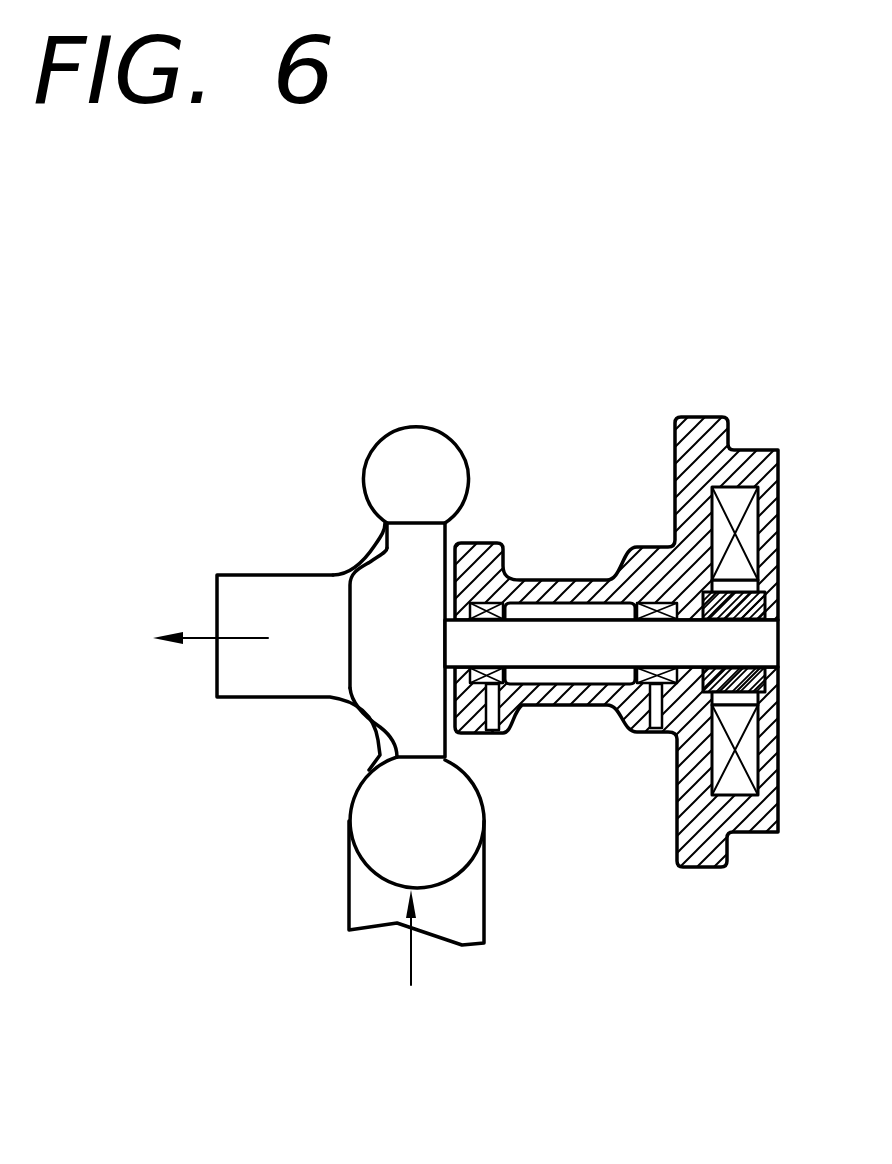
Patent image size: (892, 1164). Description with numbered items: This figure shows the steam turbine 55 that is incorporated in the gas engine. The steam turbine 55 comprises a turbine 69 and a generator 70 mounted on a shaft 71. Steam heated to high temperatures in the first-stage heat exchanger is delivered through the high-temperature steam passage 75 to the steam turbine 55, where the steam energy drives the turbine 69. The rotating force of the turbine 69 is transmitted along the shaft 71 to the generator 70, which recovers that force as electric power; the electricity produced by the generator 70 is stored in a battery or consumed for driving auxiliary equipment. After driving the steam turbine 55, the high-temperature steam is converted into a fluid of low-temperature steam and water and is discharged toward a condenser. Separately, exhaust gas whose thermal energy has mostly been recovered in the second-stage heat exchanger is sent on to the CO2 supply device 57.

The steam turbine 55 is at (573, 528).
The CO2 supply device 57 is at (265, 597).
The turbine 69 is at (383, 598).
The generator 70 is at (748, 536).
The shaft 71 is at (587, 648).
The high-temperature steam passage 75 is at (377, 900).